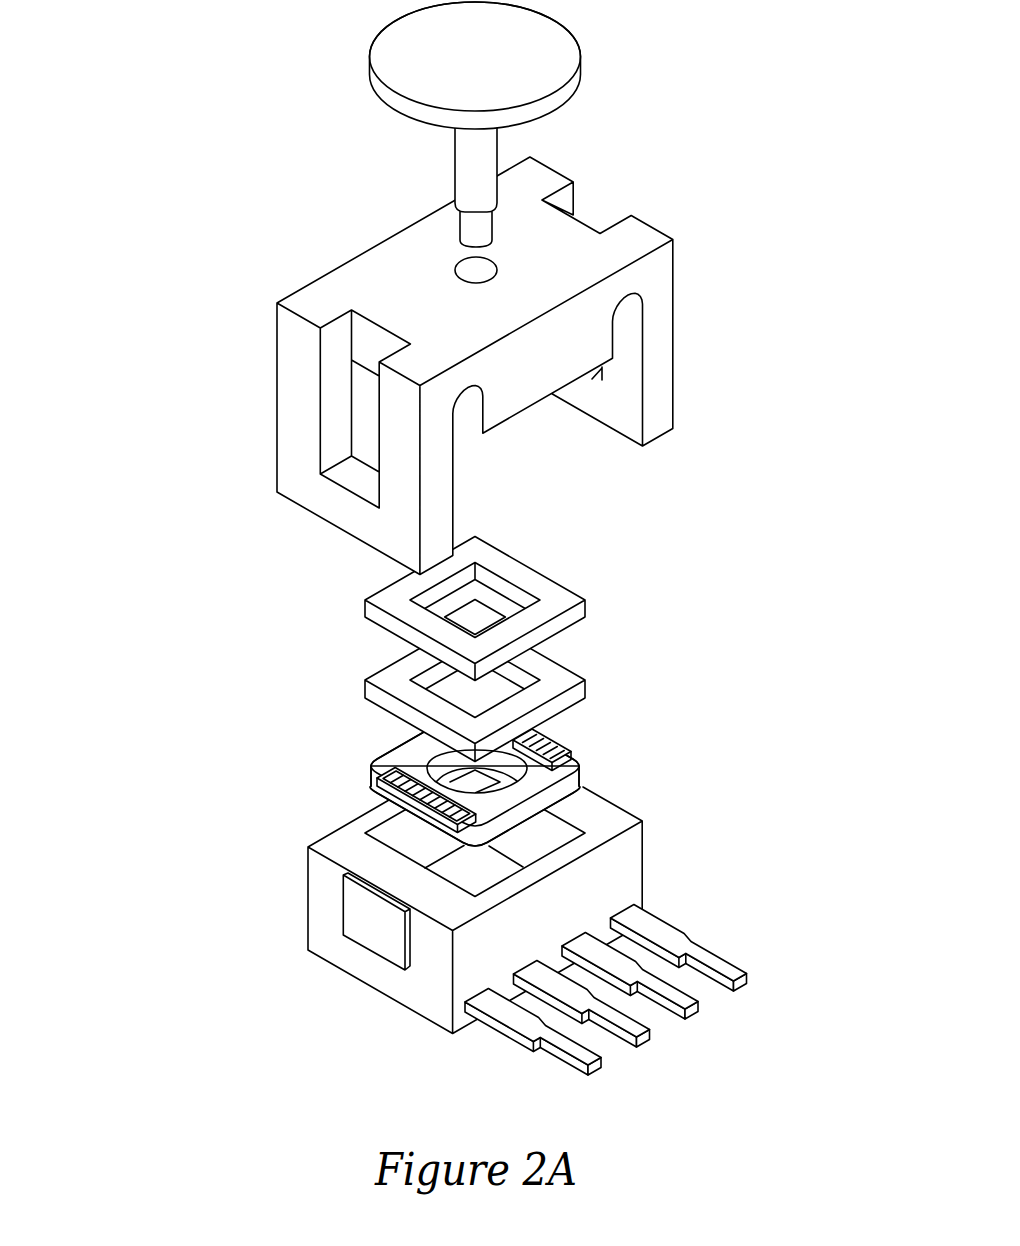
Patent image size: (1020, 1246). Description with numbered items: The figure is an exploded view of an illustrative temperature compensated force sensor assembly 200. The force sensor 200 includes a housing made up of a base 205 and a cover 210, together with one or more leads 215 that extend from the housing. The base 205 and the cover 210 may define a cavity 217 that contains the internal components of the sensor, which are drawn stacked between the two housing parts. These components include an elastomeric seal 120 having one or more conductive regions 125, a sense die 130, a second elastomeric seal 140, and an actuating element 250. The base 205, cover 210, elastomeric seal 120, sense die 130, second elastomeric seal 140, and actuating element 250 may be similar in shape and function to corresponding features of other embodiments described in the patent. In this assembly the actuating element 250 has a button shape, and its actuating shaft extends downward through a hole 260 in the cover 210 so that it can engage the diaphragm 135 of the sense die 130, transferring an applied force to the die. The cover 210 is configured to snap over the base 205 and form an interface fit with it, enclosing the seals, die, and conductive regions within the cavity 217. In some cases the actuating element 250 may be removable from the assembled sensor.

The temperature compensated force sensor assembly 200 is at (193, 620).
The base 205 is at (320, 890).
The cover 210 is at (658, 359).
The leads 215 is at (721, 962).
The cavity 217 is at (424, 846).
The elastomeric seal 120 is at (377, 760).
The conductive regions 125 is at (376, 783).
The sense die 130 is at (390, 680).
The diaphragm 135 is at (493, 695).
The second elastomeric seal 140 is at (390, 600).
The actuating element 250 is at (553, 67).
The hole 260 is at (473, 268).